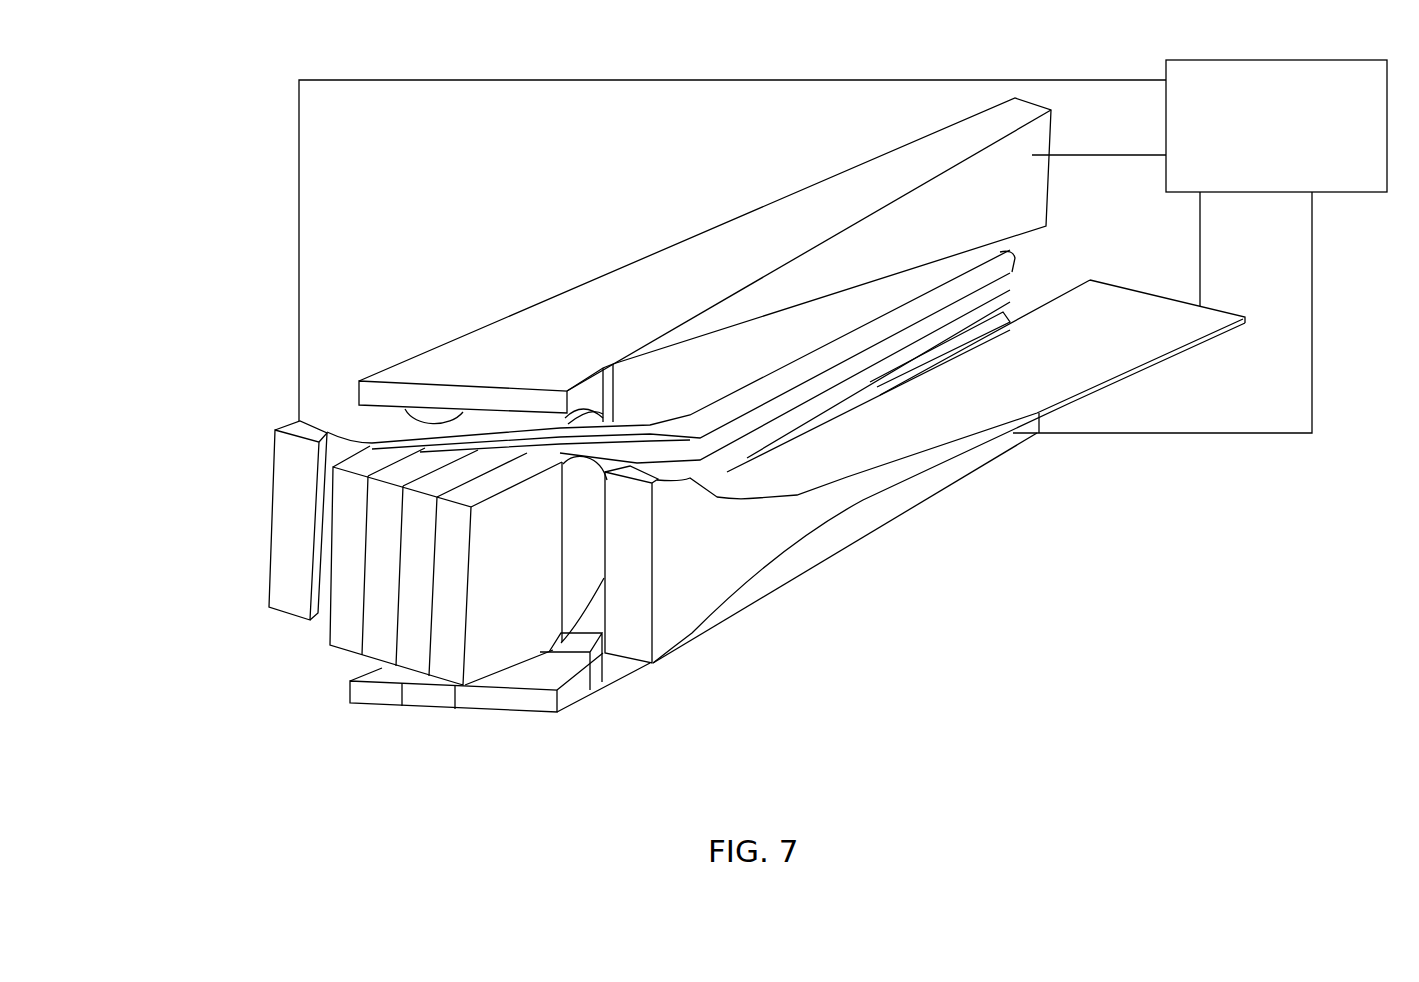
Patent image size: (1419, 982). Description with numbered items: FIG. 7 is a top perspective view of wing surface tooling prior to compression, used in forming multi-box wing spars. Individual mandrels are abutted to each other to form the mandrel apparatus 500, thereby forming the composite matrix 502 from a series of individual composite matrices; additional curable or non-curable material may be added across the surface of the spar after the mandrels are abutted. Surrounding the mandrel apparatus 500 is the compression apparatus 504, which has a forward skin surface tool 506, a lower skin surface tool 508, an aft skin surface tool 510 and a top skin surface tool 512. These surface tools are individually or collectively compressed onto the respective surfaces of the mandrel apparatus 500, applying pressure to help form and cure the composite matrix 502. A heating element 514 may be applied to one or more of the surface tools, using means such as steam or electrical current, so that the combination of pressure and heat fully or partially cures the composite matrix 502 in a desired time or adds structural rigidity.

The mandrel apparatus 500 is at (376, 625).
The composite matrix 502 is at (997, 268).
The compression apparatus 504 is at (960, 520).
The forward skin surface tool 506 is at (767, 512).
The lower skin surface tool 508 is at (545, 682).
The aft skin surface tool 510 is at (300, 474).
The top skin surface tool 512 is at (768, 230).
The heating element 514 is at (843, 246).